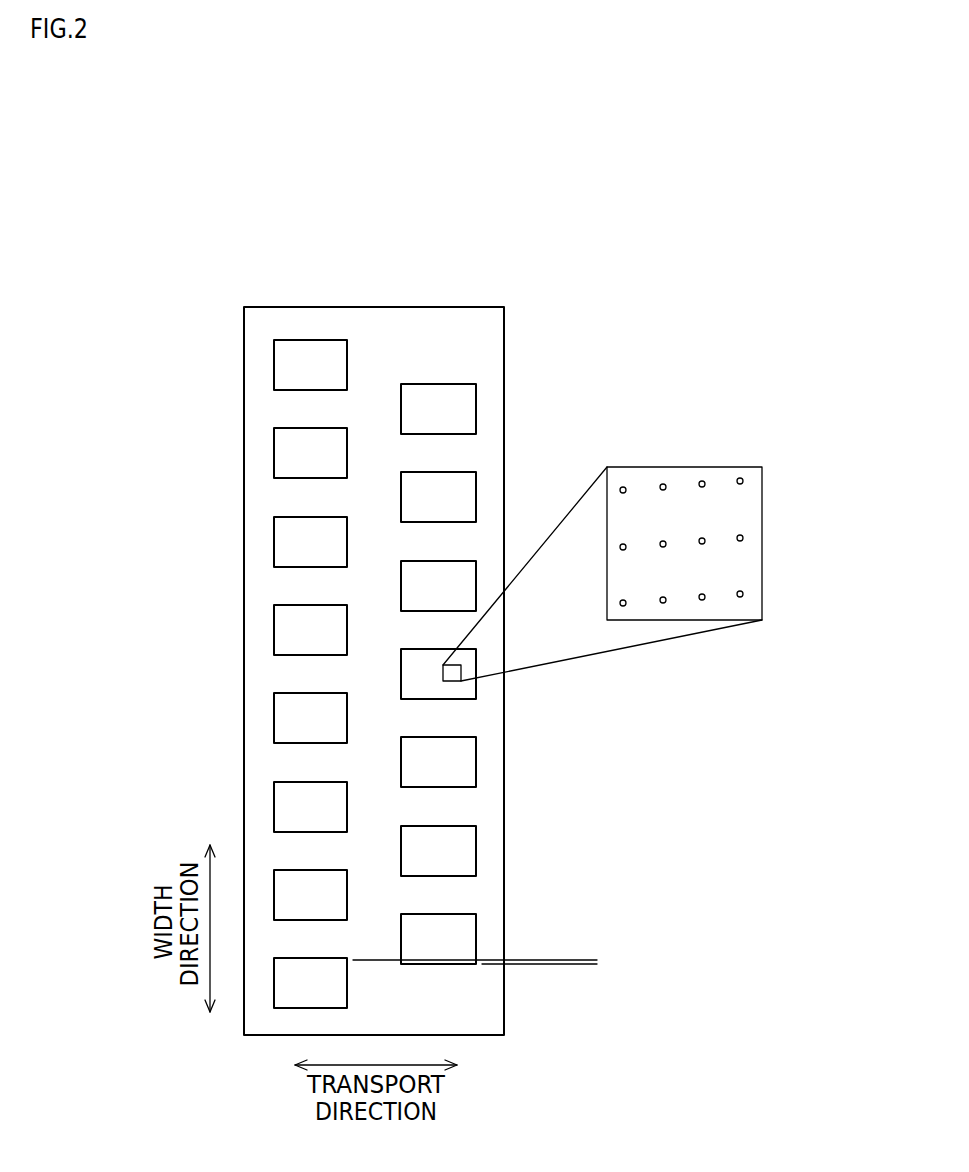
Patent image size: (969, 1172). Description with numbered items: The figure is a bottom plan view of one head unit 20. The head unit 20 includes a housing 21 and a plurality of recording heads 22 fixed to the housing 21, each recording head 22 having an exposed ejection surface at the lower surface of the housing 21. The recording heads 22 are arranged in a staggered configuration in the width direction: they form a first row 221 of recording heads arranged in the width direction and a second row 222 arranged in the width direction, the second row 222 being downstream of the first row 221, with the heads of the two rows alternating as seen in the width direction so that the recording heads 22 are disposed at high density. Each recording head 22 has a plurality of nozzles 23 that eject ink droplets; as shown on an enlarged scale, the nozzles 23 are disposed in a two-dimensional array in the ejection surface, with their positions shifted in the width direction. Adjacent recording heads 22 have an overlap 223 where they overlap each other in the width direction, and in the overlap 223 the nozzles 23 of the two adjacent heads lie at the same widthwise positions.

The head unit 20 is at (272, 268).
The housing 21 is at (475, 345).
The recording heads 22 is at (423, 405).
The first row 221 is at (429, 375).
The second row 222 is at (322, 328).
The overlap 223 is at (586, 995).
The nozzles 23 is at (702, 480).